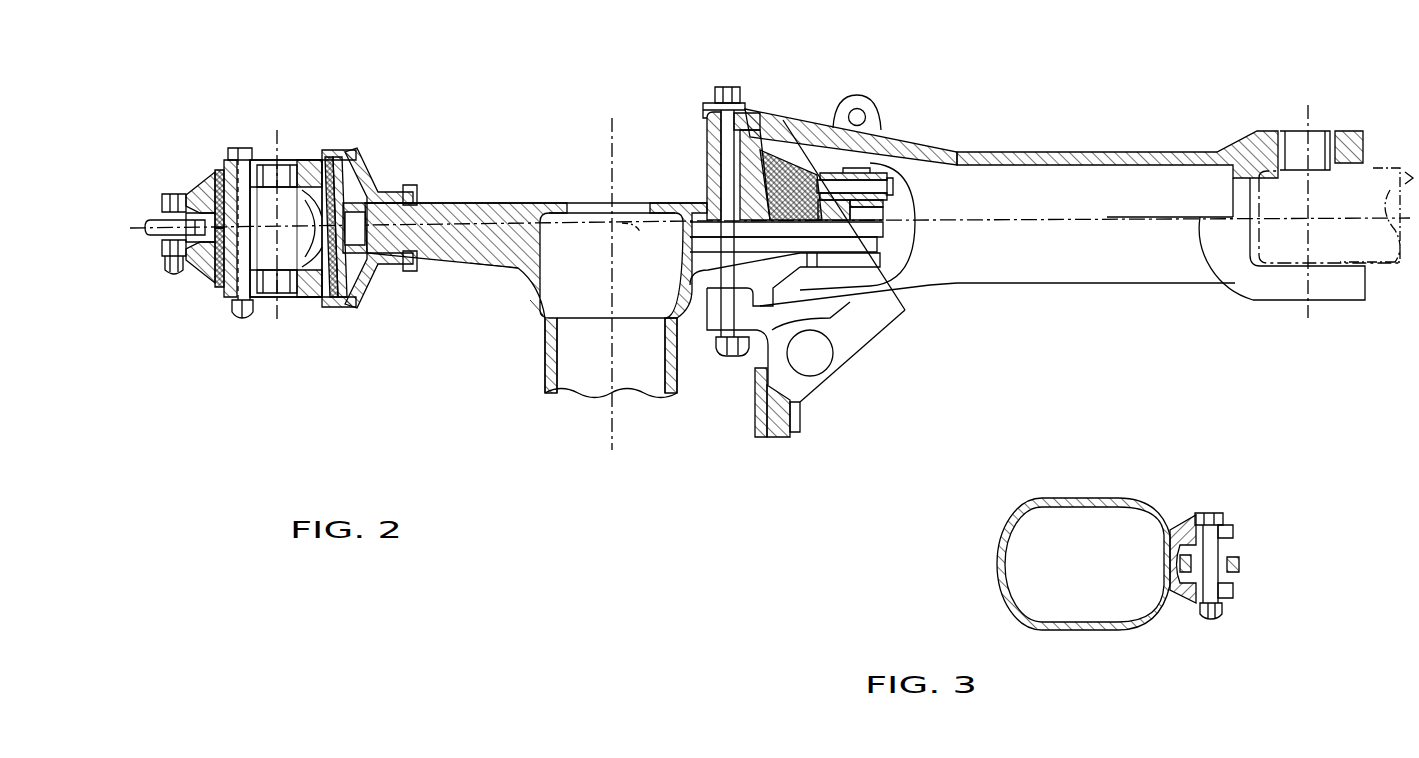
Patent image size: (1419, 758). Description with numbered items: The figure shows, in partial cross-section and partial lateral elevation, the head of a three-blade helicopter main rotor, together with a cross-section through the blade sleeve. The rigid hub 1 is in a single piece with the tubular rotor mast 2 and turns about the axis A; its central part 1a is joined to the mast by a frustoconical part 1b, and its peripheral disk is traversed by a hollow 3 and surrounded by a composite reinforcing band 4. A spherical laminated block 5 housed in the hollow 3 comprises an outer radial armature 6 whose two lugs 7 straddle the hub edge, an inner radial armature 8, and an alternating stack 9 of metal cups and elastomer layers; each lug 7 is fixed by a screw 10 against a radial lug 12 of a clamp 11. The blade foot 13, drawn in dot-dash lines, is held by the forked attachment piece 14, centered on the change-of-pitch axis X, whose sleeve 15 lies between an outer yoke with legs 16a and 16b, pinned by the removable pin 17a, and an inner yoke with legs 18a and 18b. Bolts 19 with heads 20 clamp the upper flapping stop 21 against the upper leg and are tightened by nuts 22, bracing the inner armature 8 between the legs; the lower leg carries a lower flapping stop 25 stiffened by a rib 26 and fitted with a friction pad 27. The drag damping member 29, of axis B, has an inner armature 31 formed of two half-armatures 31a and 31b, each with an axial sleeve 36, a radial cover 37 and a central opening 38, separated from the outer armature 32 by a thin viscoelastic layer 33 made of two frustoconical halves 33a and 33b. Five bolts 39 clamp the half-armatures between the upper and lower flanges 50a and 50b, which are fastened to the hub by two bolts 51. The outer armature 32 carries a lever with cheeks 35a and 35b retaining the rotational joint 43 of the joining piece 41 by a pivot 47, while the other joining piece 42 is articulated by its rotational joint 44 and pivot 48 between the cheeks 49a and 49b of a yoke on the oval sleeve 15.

In FIG. 2, the rigid hub 1 is at (512, 190).
In FIG. 2, the central part of the hub 1a is at (515, 256).
In FIG. 2, the frustoconical part 1b is at (537, 303).
In FIG. 2, the tubular rotor mast 2 is at (545, 375).
In FIG. 2, the hollow 3 is at (690, 208).
In FIG. 2, the reinforcing band 4 is at (887, 211).
In FIG. 2, the spherical laminated block 5 is at (810, 135).
In FIG. 2, the outer radial armature 6 is at (897, 305).
In FIG. 2, the lugs 7 is at (838, 177).
In FIG. 2, the inner radial armature 8 is at (762, 140).
In FIG. 2, the alternating stack 9 is at (798, 150).
In FIG. 2, the screw 10 is at (893, 187).
In FIG. 2, the clamp 11 is at (887, 236).
In FIG. 2, the radial lug of the clamp 12 is at (865, 172).
In FIG. 2, the blade foot 13 is at (1373, 193).
In FIG. 2, the forked attachment piece 14 is at (1095, 288).
In FIG. 2, the sleeve 15 is at (1083, 157).
In FIG. 3, the sleeve 15 is at (1090, 505).
In FIG. 2, the leg of outer yoke 16a is at (1350, 140).
In FIG. 2, the leg of outer yoke 16b is at (1347, 287).
In FIG. 2, the removable pin 17a is at (1297, 147).
In FIG. 2, the upper inner radial leg 18a is at (825, 135).
In FIG. 2, the lower inner radial leg 18b is at (852, 302).
In FIG. 2, the bolt 19 is at (721, 147).
In FIG. 2, the bolt head 20 is at (728, 87).
In FIG. 2, the upper flapping stop 21 is at (703, 98).
In FIG. 2, the nut 22 is at (732, 357).
In FIG. 2, the lower flapping stop 25 is at (783, 373).
In FIG. 2, the rib 26 is at (843, 362).
In FIG. 2, the removable friction pad 27 is at (755, 407).
In FIG. 2, the member for elastic return in rotation 29 is at (290, 125).
In FIG. 2, the inner armature 31 is at (302, 195).
In FIG. 2, the upper inner half-armature 31a is at (266, 163).
In FIG. 2, the lower inner half-armature 31b is at (262, 295).
In FIG. 2, the outer armature 32 is at (352, 278).
In FIG. 2, the tubular layer of viscoelastic elastomer 33 is at (335, 165).
In FIG. 2, the frustoconical half of the elastomeric layer 33a is at (218, 195).
In FIG. 2, the frustoconical half of the elastomeric layer 33b is at (218, 287).
In FIG. 2, the cheek of the lever 35a is at (168, 195).
In FIG. 2, the cheek of the lever 35b is at (180, 265).
In FIG. 2, the axial sleeve 36 is at (305, 297).
In FIG. 2, the radial cover 37 is at (330, 298).
In FIG. 2, the central volume-reducing opening 38 is at (274, 300).
In FIG. 2, the axial fastening bolt 39 is at (236, 147).
In FIG. 2, the joining piece 41 is at (155, 225).
In FIG. 3, the joining piece 42 is at (1237, 565).
In FIG. 2, the rotational joint 43 is at (165, 262).
In FIG. 3, the rotational joint 44 is at (1223, 570).
In FIG. 2, the pivot 47 is at (178, 193).
In FIG. 3, the pivot 48 is at (1204, 515).
In FIG. 3, the cheek of the yoke 49a is at (1233, 535).
In FIG. 3, the cheek of the yoke 49b is at (1235, 595).
In FIG. 2, the upper flange 50a is at (360, 215).
In FIG. 2, the lower flange 50b is at (350, 302).
In FIG. 2, the bolt 51 is at (413, 180).
In FIG. 2, the axis of the rotor A is at (606, 145).
In FIG. 2, the axis of the member B is at (282, 333).
In FIG. 2, the longitudinal change-of-pitch axis X is at (640, 241).